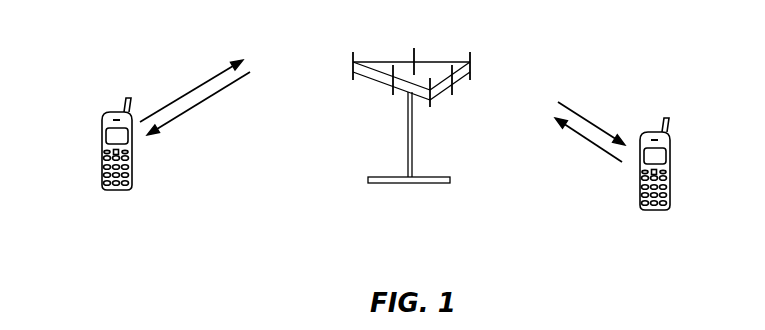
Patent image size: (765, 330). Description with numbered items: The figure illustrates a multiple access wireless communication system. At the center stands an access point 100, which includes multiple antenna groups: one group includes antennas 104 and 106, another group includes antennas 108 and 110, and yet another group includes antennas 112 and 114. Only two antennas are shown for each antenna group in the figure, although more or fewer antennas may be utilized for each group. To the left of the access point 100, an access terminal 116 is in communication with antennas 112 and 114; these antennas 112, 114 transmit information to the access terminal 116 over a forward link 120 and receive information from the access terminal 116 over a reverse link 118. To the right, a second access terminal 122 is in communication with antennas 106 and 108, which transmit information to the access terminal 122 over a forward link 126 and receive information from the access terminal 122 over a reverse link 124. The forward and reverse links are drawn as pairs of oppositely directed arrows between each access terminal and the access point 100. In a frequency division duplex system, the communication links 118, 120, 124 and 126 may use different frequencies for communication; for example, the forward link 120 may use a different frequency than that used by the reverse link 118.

The access point 100 is at (408, 183).
The antenna 104 is at (433, 108).
The antenna 106 is at (453, 90).
The antenna 108 is at (473, 73).
The antenna 110 is at (415, 48).
The antenna 112 is at (353, 53).
The antenna 114 is at (390, 93).
The access terminal 116 is at (102, 128).
The reverse link 118 is at (200, 83).
The forward link 120 is at (187, 115).
The access terminal 122 is at (670, 152).
The reverse link 124 is at (597, 148).
The forward link 126 is at (590, 120).